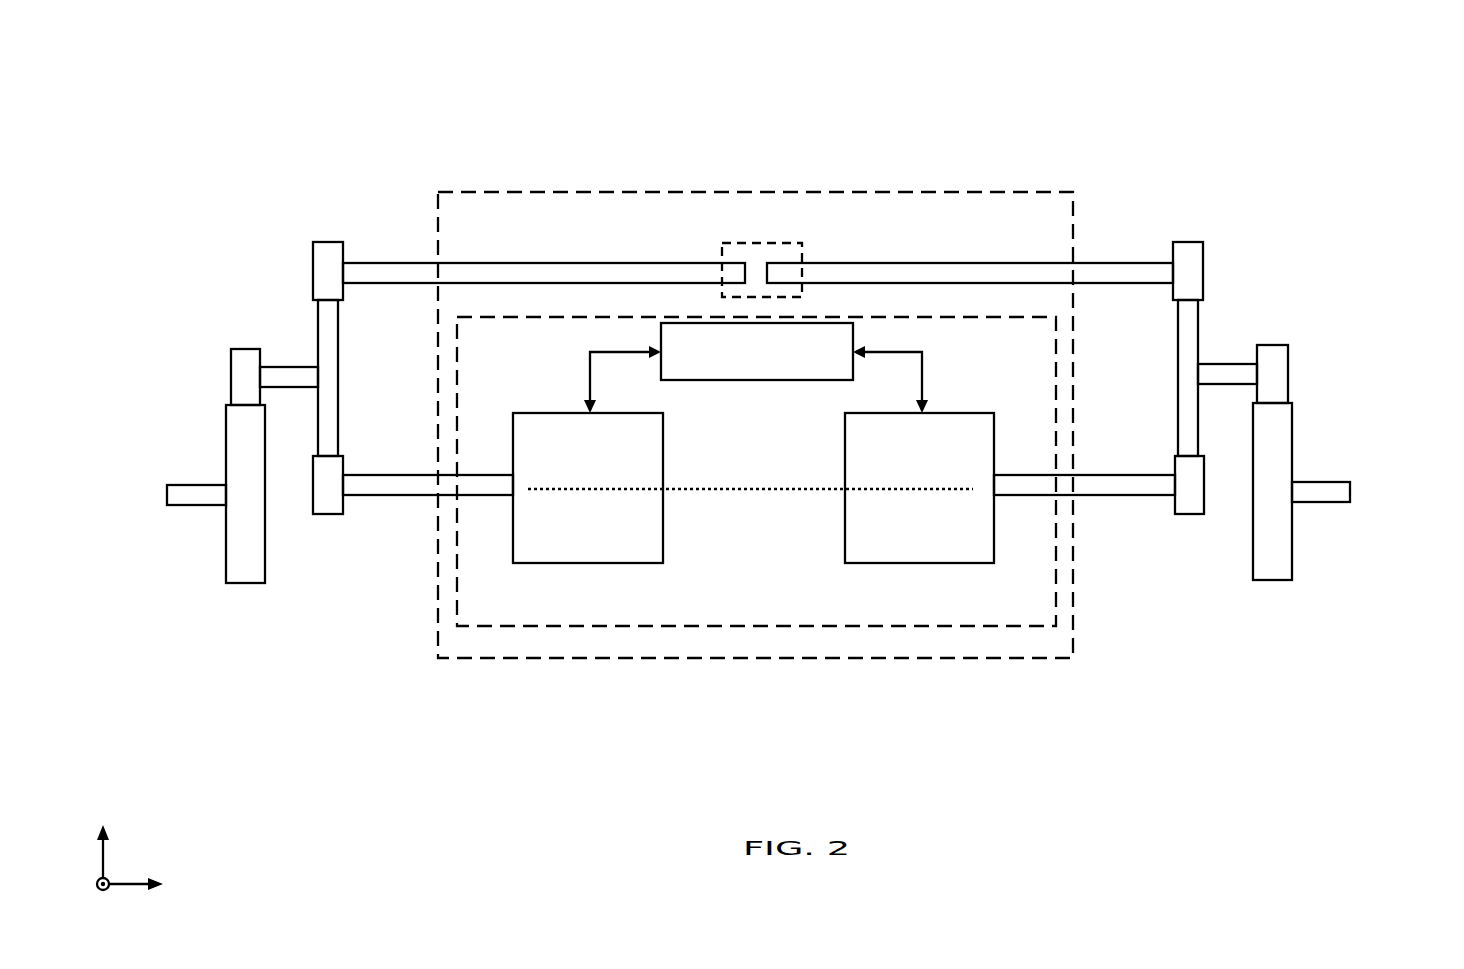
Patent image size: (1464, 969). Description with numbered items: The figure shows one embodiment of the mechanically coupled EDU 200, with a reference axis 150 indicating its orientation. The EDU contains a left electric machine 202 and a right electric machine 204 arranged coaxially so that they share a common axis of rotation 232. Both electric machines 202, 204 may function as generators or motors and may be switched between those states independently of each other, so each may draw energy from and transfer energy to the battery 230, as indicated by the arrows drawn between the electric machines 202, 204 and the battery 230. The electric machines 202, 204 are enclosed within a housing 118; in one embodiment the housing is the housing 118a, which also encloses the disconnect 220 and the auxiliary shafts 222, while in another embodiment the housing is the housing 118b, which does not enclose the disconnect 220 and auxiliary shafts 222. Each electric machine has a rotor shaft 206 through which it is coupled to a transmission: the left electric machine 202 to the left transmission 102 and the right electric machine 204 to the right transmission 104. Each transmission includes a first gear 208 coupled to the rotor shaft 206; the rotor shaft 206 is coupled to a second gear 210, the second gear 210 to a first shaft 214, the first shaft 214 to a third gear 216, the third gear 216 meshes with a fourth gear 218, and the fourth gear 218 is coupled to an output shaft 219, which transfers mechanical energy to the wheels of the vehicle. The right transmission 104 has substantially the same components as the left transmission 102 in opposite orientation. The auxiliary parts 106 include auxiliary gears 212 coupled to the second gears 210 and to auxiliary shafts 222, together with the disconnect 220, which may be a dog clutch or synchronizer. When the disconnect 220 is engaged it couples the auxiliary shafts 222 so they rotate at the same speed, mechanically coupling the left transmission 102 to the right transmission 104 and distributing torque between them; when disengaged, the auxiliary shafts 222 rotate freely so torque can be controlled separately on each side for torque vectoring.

The mechanically coupled EDU 200 is at (416, 84).
The housing 118 is at (642, 140).
The housing 118a is at (510, 190).
The housing 118b is at (538, 318).
The left transmission 102 is at (184, 282).
The right transmission 104 is at (1370, 274).
The auxiliary parts 106 is at (1134, 188).
The reference axis 150 is at (158, 846).
The left electric machine 202 is at (633, 564).
The right electric machine 204 is at (905, 564).
The rotor shaft 206 is at (359, 475).
The first gear 208 is at (323, 516).
The second gear 210 is at (338, 343).
The auxiliary gear 212 is at (325, 241).
The first shaft 214 is at (297, 366).
The third gear 216 is at (231, 386).
The fourth gear 218 is at (245, 585).
The output shaft 219 is at (195, 508).
The disconnect 220 is at (752, 243).
The auxiliary shaft 222 is at (652, 264).
The battery 230 is at (793, 381).
The common axis of rotation 232 is at (702, 488).